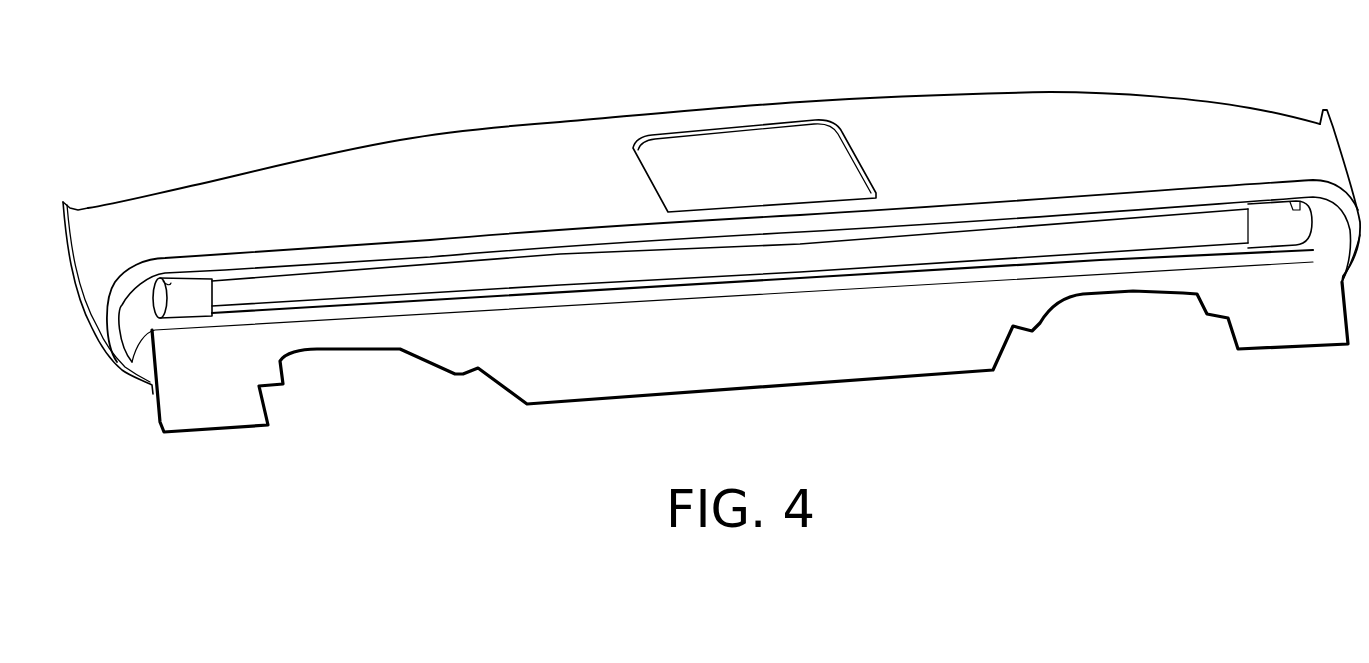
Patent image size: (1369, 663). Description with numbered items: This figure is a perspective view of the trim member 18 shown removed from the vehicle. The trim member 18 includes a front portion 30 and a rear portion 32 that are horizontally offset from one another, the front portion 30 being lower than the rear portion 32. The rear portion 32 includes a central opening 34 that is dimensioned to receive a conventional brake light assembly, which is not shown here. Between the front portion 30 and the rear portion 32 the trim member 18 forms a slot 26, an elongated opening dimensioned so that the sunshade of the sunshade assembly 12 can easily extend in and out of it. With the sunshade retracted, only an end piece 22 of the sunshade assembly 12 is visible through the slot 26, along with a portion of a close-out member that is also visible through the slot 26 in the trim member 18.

The sunshade assembly 12 is at (966, 193).
The trim member 18 is at (711, 253).
The end piece 22 is at (540, 278).
The slot 26 is at (317, 307).
The front portion 30 is at (523, 352).
The rear portion 32 is at (358, 180).
The central opening 34 is at (757, 128).